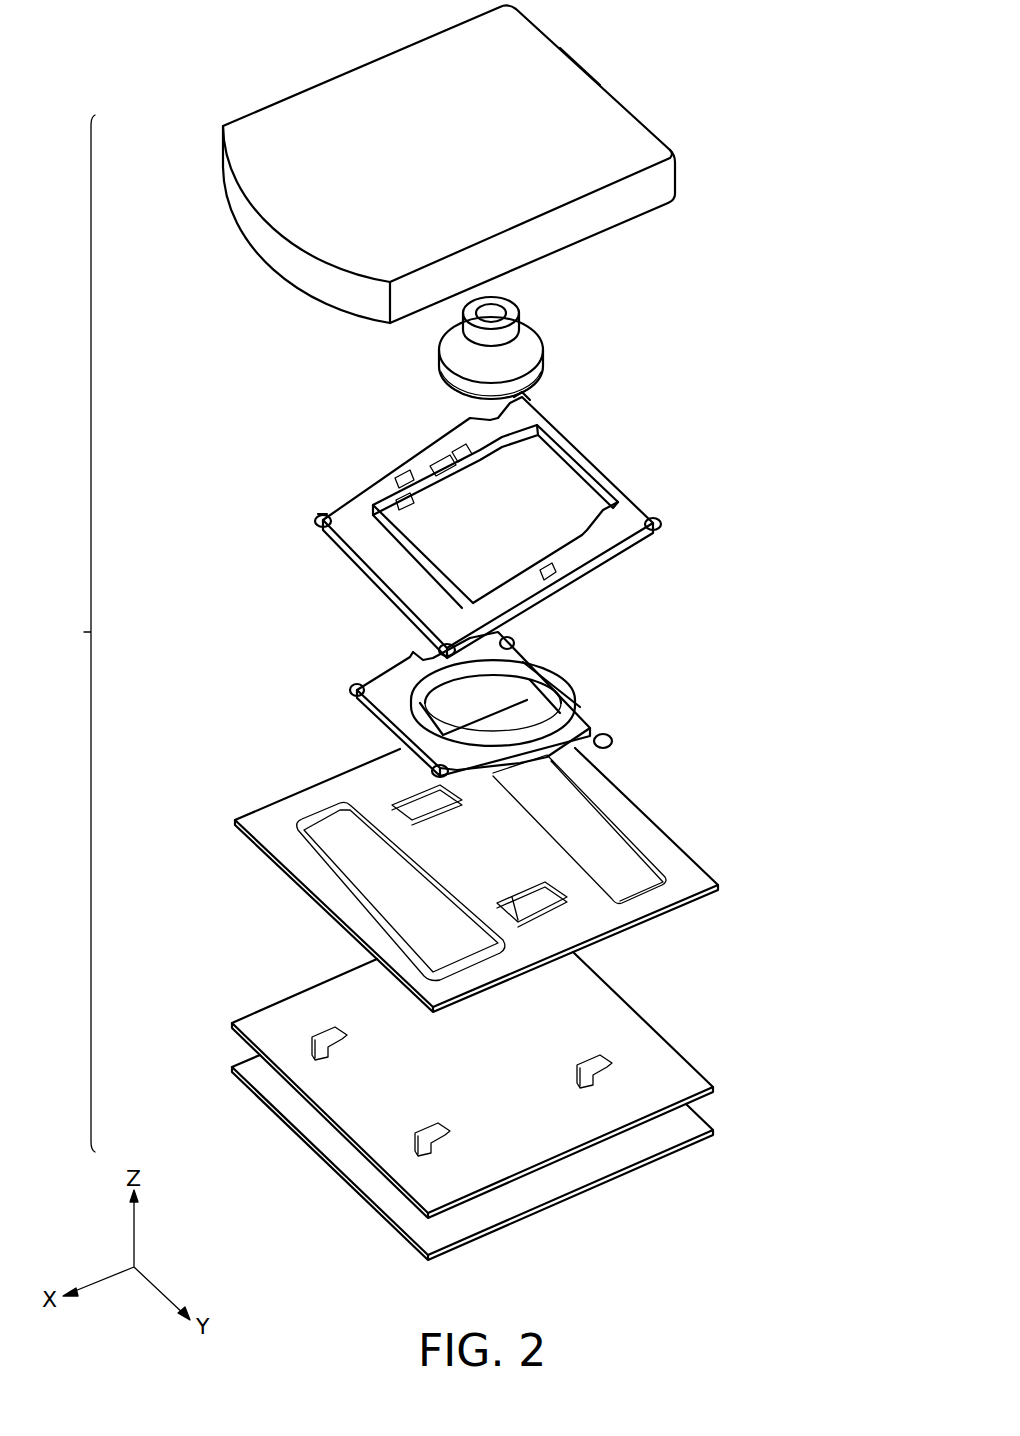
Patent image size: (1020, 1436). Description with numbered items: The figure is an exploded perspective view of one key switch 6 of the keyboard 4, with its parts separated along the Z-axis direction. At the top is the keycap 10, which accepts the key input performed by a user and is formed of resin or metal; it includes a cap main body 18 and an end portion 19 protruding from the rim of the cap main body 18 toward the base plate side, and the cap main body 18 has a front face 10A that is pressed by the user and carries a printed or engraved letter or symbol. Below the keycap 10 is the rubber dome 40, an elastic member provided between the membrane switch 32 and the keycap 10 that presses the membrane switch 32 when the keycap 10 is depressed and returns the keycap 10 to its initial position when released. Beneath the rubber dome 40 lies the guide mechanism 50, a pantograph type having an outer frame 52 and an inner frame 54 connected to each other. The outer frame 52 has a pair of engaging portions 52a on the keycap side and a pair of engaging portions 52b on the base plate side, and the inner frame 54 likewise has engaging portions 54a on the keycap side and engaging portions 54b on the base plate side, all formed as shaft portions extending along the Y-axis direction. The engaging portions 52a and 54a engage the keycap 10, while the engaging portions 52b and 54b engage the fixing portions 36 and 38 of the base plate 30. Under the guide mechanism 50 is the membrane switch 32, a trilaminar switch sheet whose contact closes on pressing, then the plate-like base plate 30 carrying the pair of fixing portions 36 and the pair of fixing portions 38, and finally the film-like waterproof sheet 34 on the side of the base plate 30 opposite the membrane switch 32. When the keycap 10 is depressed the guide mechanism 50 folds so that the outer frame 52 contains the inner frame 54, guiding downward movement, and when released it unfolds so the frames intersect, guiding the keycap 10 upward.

The keyboard 4 is at (813, 33).
The key switch 6 is at (78, 633).
The keycap 10 is at (450, 164).
The front face 10A is at (570, 90).
The cap main body 18 is at (315, 115).
The end portion 19 is at (215, 165).
The rubber dome 40 is at (437, 365).
The guide mechanism 50 is at (491, 577).
The outer frame 52 is at (491, 517).
The engaging portions 52a is at (524, 397).
The engaging portions 52b is at (318, 526).
The inner frame 54 is at (494, 694).
The engaging portions 54a is at (350, 690).
The engaging portions 54b is at (513, 642).
The membrane switch 32 is at (720, 887).
The base plate 30 is at (513, 1094).
The waterproof sheet 34 is at (715, 1130).
The fixing portions 36 is at (313, 1045).
The fixing portions 38 is at (605, 1058).